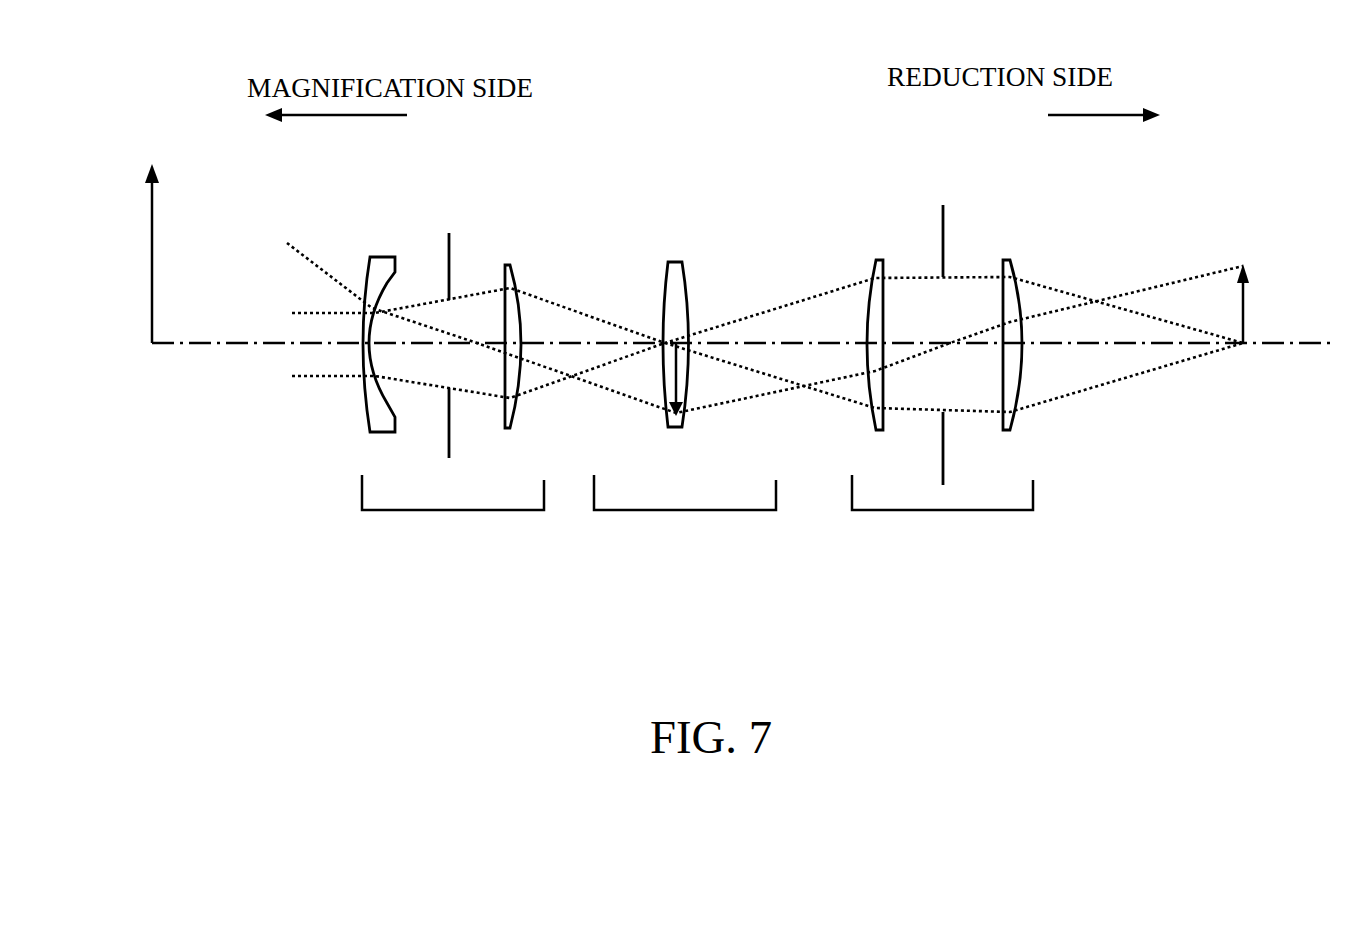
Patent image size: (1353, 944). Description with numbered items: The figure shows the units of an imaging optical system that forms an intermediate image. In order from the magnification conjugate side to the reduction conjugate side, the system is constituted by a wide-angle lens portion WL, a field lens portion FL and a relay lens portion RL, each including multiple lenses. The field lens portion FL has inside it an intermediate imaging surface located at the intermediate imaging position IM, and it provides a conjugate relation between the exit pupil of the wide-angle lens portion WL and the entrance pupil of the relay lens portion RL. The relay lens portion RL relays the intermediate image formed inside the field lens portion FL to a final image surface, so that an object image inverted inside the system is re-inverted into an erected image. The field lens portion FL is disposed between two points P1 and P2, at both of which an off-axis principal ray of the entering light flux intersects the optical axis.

The wide-angle lens portion WL is at (453, 408).
The field lens portion FL is at (685, 410).
The relay lens portion RL is at (942, 409).
The point P1 is at (474, 342).
The point P2 is at (950, 343).
The intermediate imaging position IM is at (676, 400).